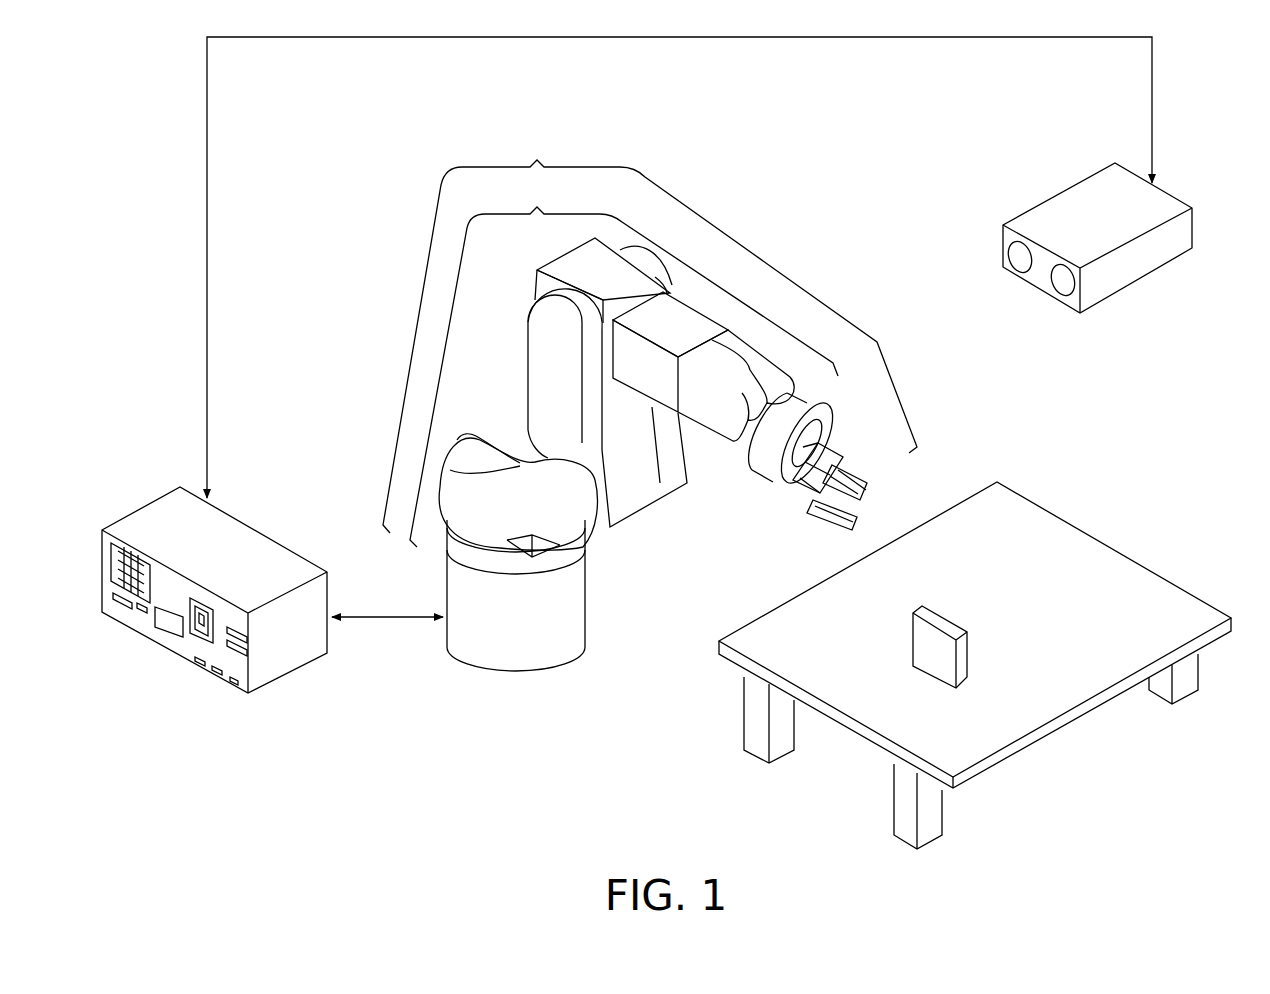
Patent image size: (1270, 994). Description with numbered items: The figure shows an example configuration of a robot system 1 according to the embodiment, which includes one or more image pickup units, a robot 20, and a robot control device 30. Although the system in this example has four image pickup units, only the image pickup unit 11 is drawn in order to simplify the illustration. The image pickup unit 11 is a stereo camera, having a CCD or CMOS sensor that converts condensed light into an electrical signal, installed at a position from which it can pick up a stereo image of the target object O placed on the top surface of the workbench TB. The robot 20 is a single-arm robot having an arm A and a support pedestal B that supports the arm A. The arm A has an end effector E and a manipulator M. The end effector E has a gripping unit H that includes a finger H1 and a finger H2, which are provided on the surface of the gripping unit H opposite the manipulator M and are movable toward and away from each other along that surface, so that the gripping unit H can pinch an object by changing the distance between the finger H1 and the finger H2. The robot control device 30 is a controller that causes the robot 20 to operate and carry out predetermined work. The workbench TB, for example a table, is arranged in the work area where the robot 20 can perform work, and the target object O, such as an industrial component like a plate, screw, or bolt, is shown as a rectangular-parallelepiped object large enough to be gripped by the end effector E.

The robot system 1 is at (347, 147).
The image pickup unit 11 is at (1070, 208).
The robot 20 is at (628, 541).
The robot control device 30 is at (292, 670).
The arm A is at (650, 334).
The manipulator M is at (624, 364).
The support pedestal B is at (587, 617).
The end effector E is at (796, 500).
The gripping unit H is at (817, 470).
The finger H1 is at (867, 484).
The finger H2 is at (833, 520).
The workbench TB is at (974, 506).
The target object O is at (969, 656).